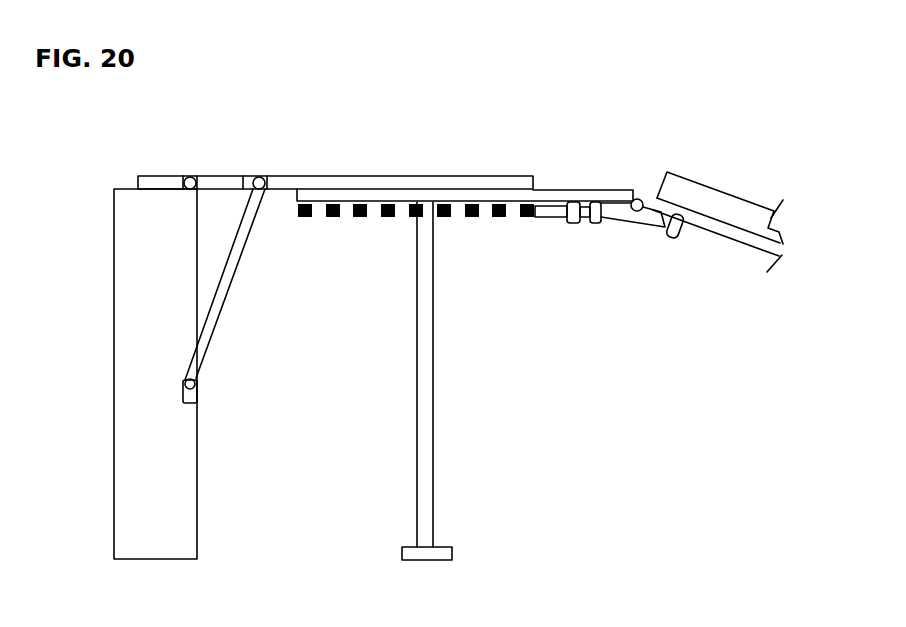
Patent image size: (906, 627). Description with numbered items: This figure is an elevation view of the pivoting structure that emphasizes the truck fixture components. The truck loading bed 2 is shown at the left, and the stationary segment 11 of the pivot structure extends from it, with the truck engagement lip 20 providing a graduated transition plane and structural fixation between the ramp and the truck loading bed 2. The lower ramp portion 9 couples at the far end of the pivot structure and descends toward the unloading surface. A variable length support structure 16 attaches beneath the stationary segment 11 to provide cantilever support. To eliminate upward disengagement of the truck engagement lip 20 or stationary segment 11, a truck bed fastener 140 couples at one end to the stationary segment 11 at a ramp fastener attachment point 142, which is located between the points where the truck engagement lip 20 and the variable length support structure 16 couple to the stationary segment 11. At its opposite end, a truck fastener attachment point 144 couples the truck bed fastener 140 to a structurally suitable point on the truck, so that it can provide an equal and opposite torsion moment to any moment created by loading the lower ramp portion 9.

The truck loading bed 2 is at (112, 189).
The truck engagement lip 20 is at (163, 178).
The ramp fastener attachment point 142 is at (255, 180).
The stationary segment 11 is at (322, 177).
The truck bed fastener 140 is at (238, 240).
The truck fastener attachment point 144 is at (195, 385).
The variable length support structure 16 is at (422, 358).
The lower ramp portion 9 is at (747, 218).